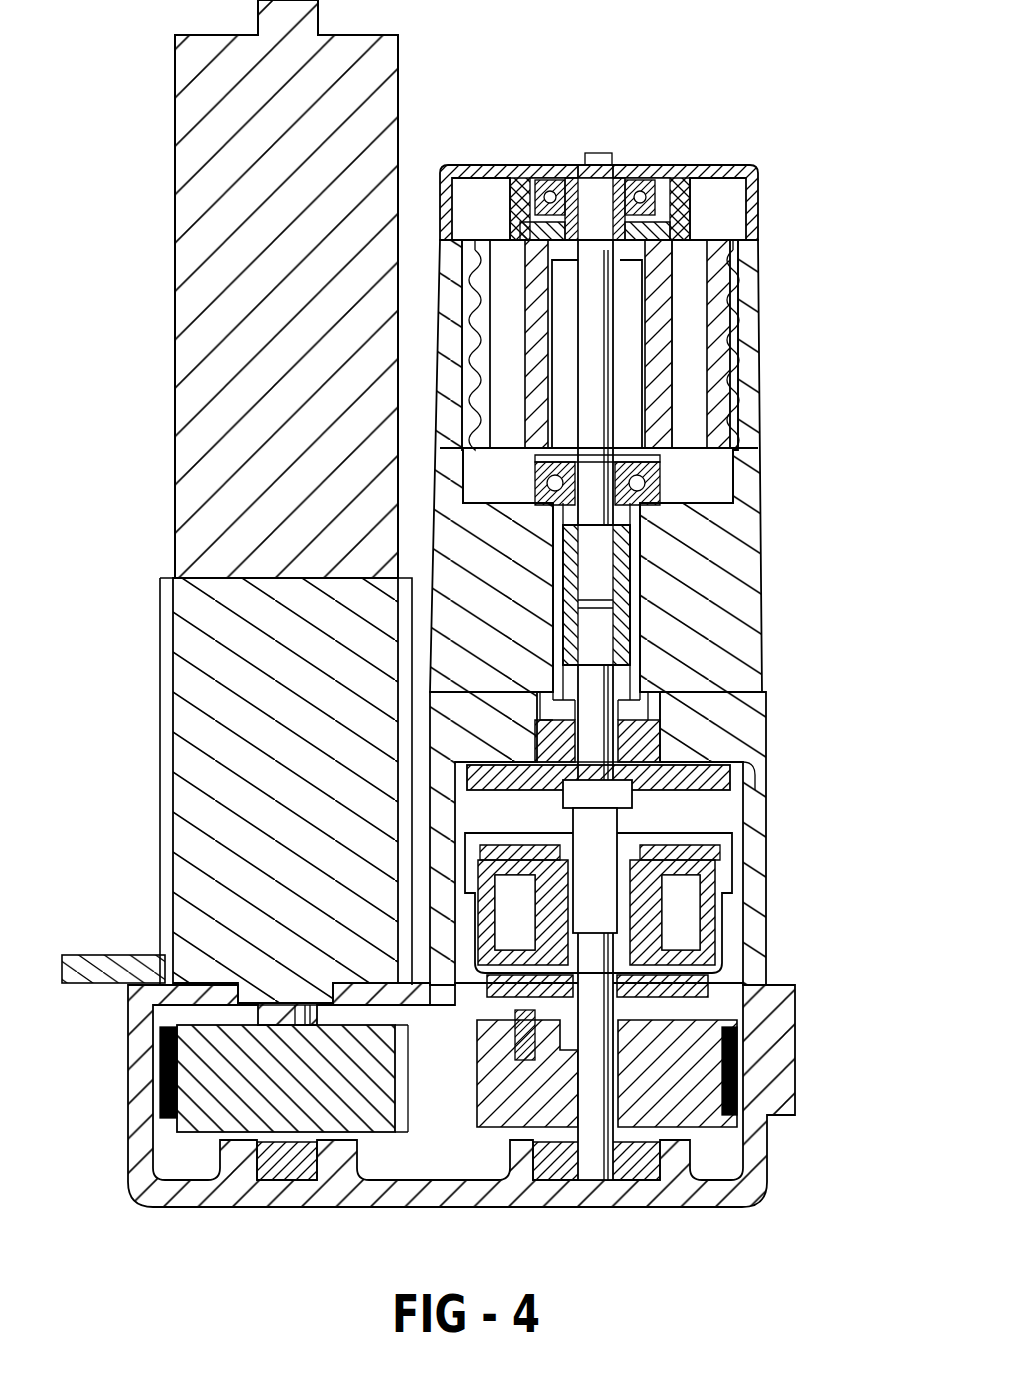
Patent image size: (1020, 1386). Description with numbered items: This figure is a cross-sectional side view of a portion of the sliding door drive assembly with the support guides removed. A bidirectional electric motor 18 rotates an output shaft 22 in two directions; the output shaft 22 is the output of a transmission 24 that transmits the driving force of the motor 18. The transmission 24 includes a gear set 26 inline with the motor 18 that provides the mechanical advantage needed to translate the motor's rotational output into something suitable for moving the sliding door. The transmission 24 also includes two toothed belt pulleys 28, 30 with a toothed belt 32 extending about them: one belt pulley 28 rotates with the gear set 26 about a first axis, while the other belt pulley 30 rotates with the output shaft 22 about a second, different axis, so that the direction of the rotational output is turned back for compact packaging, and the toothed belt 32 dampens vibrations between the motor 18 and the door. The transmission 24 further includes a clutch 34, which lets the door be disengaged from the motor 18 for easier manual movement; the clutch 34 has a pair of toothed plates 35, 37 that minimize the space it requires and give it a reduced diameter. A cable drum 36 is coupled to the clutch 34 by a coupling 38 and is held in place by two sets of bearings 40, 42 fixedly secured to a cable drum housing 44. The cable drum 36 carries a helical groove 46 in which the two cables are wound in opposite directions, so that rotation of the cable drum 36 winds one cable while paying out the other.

The motor 18 is at (171, 405).
The output shaft 22 is at (613, 680).
The transmission 24 is at (152, 895).
The gear set 26 is at (158, 790).
The toothed belt pulley 28 is at (372, 1142).
The toothed belt pulley 30 is at (500, 1142).
The toothed belt 32 is at (165, 1128).
The clutch 34 is at (653, 890).
The toothed plate 35 is at (715, 827).
The cable drum 36 is at (738, 460).
The toothed plate 37 is at (680, 876).
The coupling 38 is at (633, 560).
The bearings 40 is at (640, 500).
The bearings 42 is at (680, 215).
The cable drum housing 44 is at (760, 290).
The helical groove 46 is at (730, 292).